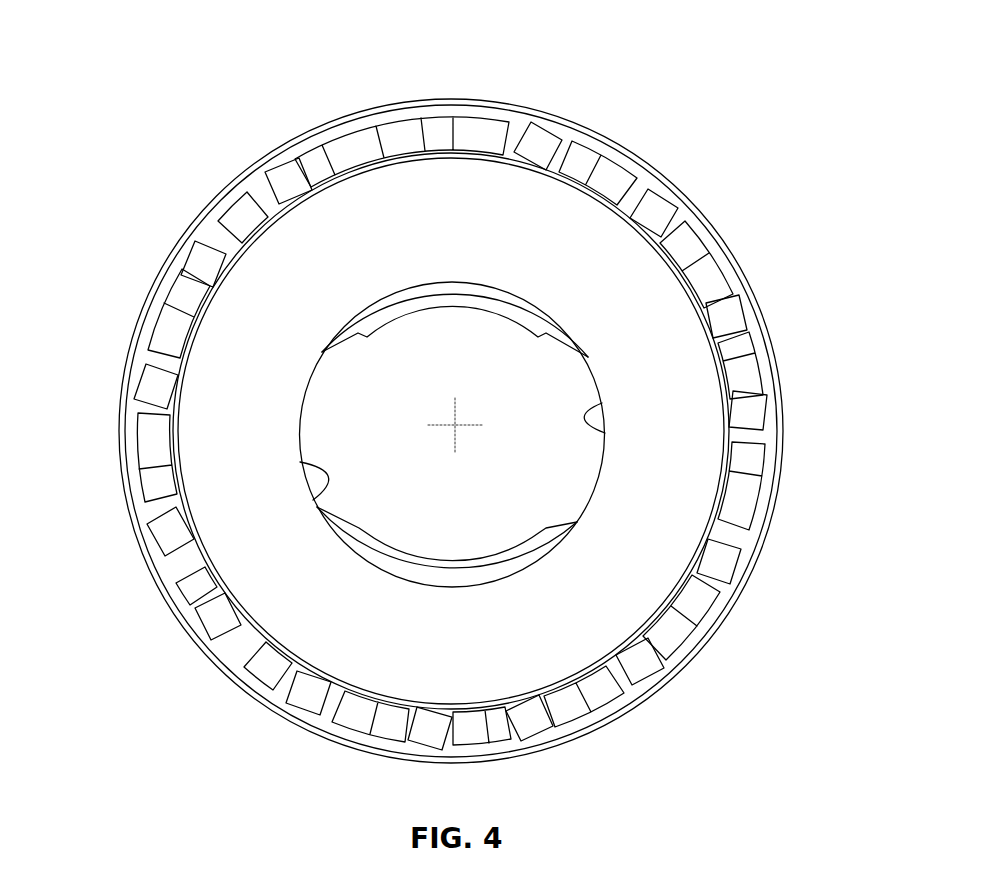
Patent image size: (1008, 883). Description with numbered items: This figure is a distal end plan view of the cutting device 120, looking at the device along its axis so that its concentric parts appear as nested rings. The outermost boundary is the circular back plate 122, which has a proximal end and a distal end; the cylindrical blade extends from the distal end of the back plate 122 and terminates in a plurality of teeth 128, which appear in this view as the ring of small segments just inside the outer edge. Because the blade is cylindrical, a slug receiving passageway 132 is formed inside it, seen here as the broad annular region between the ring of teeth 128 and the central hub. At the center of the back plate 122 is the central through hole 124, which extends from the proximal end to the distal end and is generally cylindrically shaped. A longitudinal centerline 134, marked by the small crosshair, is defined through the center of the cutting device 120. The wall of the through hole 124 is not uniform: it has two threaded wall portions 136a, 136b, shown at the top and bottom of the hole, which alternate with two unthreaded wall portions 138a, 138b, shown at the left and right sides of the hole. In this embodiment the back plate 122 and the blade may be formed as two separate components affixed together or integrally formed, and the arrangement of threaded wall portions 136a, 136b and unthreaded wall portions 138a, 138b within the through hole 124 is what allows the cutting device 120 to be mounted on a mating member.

The cutting device 120 is at (730, 82).
The back plate 122 is at (710, 662).
The central through hole 124 is at (525, 418).
The teeth 128 is at (713, 565).
The slug receiving passageway 132 is at (680, 509).
The longitudinal centerline 134 is at (455, 427).
The threaded wall portion 136a is at (400, 306).
The threaded wall portion 136b is at (385, 562).
The unthreaded wall portion 138a is at (313, 500).
The unthreaded wall portion 138b is at (605, 433).